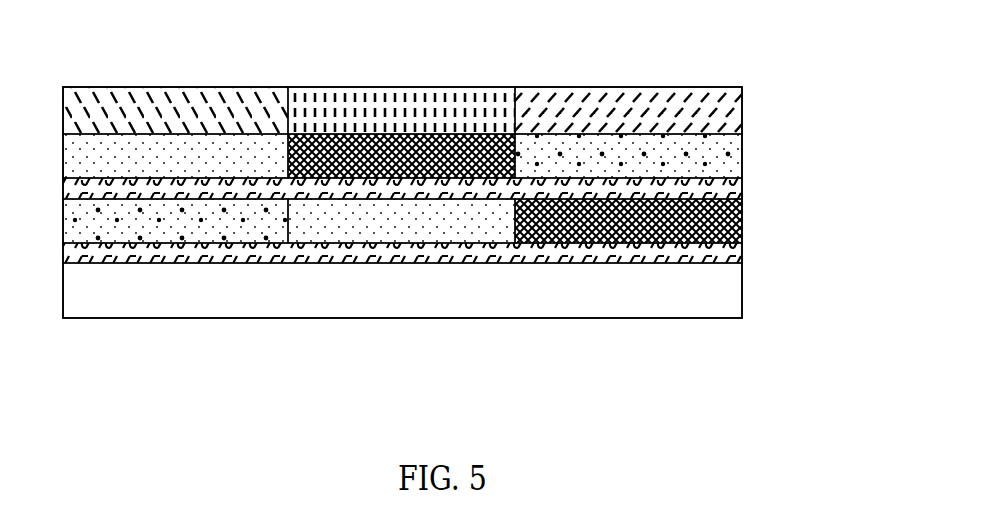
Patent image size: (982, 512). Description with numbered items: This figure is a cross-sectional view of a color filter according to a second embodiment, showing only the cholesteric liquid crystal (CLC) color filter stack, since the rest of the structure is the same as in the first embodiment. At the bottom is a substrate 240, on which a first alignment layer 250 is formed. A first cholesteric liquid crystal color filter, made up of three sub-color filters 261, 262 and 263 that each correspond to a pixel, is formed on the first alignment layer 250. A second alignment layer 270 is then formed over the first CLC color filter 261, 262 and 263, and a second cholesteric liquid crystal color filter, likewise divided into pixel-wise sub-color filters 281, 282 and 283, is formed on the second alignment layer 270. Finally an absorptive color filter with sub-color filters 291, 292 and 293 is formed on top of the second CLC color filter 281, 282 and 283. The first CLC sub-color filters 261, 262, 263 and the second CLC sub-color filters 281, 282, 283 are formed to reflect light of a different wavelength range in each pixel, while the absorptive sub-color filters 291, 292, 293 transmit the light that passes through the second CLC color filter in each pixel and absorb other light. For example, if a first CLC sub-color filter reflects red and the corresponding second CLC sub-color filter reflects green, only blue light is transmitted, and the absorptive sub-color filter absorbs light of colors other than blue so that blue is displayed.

The substrate 240 is at (723, 296).
The first alignment layer 250 is at (723, 258).
The first cholesteric liquid crystal color filter sub-color filter 261 is at (197, 230).
The first cholesteric liquid crystal color filter sub-color filter 262 is at (400, 237).
The first cholesteric liquid crystal color filter sub-color filter 263 is at (627, 242).
The second alignment layer 270 is at (723, 192).
The second cholesteric liquid crystal color filter sub-color filter 281 is at (131, 153).
The second cholesteric liquid crystal color filter sub-color filter 282 is at (352, 155).
The second cholesteric liquid crystal color filter sub-color filter 283 is at (565, 155).
The absorptive color filter sub-color filter 291 is at (218, 110).
The absorptive color filter sub-color filter 292 is at (432, 112).
The absorptive color filter sub-color filter 293 is at (655, 110).